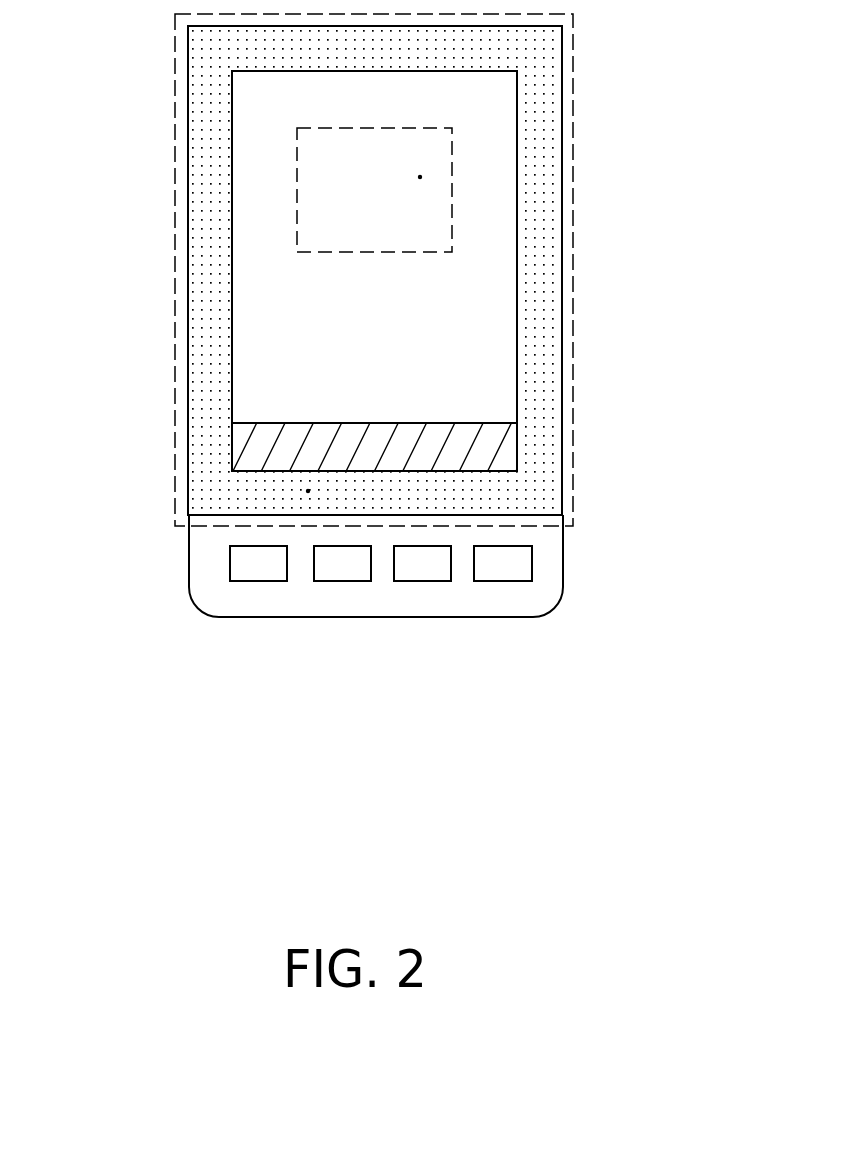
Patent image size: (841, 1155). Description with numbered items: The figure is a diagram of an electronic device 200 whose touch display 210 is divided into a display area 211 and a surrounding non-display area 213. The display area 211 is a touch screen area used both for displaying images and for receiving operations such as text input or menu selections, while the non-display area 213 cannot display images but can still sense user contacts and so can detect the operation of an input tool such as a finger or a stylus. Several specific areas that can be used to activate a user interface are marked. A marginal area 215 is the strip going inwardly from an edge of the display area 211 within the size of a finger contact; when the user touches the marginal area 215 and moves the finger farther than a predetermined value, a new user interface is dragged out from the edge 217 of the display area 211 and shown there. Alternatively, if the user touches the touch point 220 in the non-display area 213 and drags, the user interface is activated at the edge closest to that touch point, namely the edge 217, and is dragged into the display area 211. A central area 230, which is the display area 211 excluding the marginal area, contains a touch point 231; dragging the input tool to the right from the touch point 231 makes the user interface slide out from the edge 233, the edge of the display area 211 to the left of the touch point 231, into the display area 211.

The electronic device 200 is at (655, 754).
The touch display 210 is at (572, 55).
The display area 211 is at (498, 328).
The non-display area 213 is at (543, 260).
The marginal area 215 is at (493, 443).
The edge of the display area 217 is at (438, 472).
The touch point 220 is at (339, 495).
The central area 230 is at (442, 183).
The touch point 231 is at (412, 158).
The edge of the display area 233 is at (232, 233).